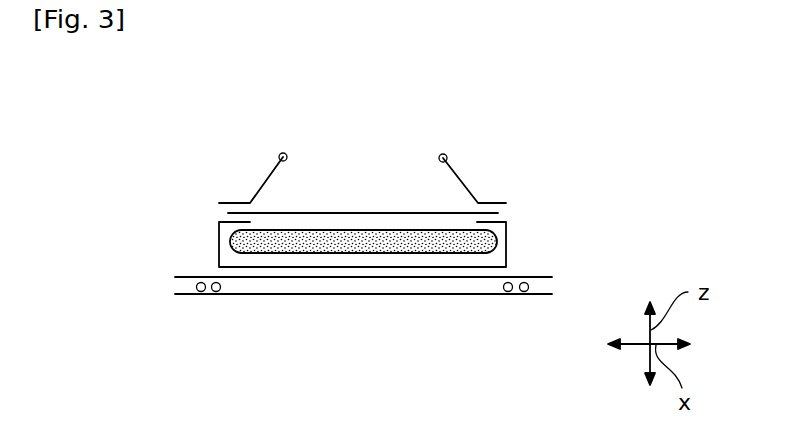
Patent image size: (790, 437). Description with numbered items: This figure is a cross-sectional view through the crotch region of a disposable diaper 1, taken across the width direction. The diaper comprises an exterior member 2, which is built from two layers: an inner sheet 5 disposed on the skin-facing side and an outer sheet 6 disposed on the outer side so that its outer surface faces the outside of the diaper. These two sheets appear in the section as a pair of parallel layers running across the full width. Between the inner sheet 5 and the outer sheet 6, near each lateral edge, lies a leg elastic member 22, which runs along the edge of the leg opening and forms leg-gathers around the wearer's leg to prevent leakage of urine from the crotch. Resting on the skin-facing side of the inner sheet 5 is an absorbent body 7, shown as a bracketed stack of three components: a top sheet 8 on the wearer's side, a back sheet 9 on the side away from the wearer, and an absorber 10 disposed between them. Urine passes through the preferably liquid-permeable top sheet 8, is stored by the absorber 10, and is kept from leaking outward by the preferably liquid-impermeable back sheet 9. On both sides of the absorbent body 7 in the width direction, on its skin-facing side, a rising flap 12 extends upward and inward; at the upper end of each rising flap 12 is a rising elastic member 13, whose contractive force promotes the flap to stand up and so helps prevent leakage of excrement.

The disposable diaper 1 is at (575, 168).
The exterior member 2 is at (363, 347).
The inner sheet 5 is at (305, 277).
The outer sheet 6 is at (338, 294).
The absorbent body 7 is at (362, 175).
The top sheet 8 is at (332, 212).
The back sheet 9 is at (370, 267).
The absorber 10 is at (318, 130).
The rising flap 12 is at (262, 178).
The rising elastic member 13 is at (280, 153).
The leg elastic member 22 is at (214, 292).